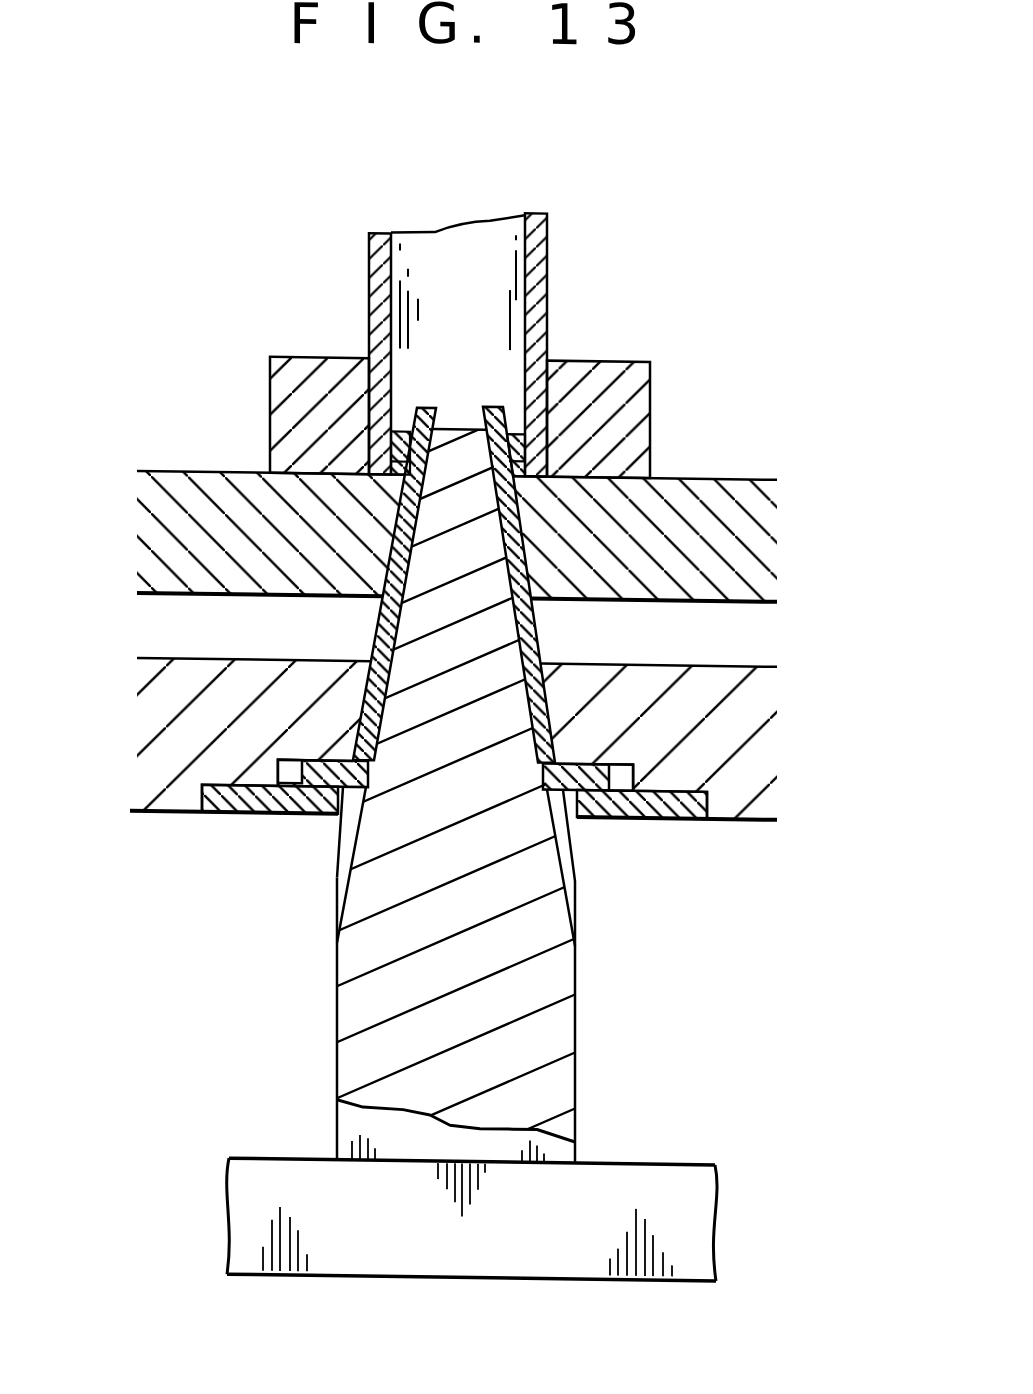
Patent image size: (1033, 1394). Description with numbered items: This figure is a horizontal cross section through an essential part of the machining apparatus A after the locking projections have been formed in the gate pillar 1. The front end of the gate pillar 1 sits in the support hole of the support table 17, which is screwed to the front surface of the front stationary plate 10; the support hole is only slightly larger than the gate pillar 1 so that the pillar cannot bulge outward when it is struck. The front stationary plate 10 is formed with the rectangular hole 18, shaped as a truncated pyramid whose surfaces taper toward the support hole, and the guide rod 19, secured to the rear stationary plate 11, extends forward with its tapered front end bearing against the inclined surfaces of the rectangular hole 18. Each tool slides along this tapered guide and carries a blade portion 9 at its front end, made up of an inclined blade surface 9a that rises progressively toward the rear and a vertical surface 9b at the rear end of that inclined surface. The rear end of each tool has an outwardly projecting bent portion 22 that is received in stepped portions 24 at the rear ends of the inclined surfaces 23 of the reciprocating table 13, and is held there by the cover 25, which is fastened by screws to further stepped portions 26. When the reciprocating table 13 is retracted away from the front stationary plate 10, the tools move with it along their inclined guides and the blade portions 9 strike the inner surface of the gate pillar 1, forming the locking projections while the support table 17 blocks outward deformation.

The gate pillar 1 is at (540, 269).
The machining apparatus A is at (804, 263).
The blade portion 9 is at (300, 368).
The inclined blade surface 9a is at (398, 433).
The vertical surface 9b is at (395, 453).
The front stationary plate 10 is at (705, 494).
The support table 17 is at (606, 369).
The rectangular hole 18 is at (508, 552).
The guide rod 19 is at (555, 1069).
The bent portion 22 is at (322, 760).
The inclined surfaces 23 is at (385, 699).
The stepped portions 24 is at (303, 817).
The cover 25 is at (232, 819).
The stepped portions 26 is at (305, 816).
The reciprocating table 13 is at (748, 816).
The rear stationary plate 11 is at (692, 1239).